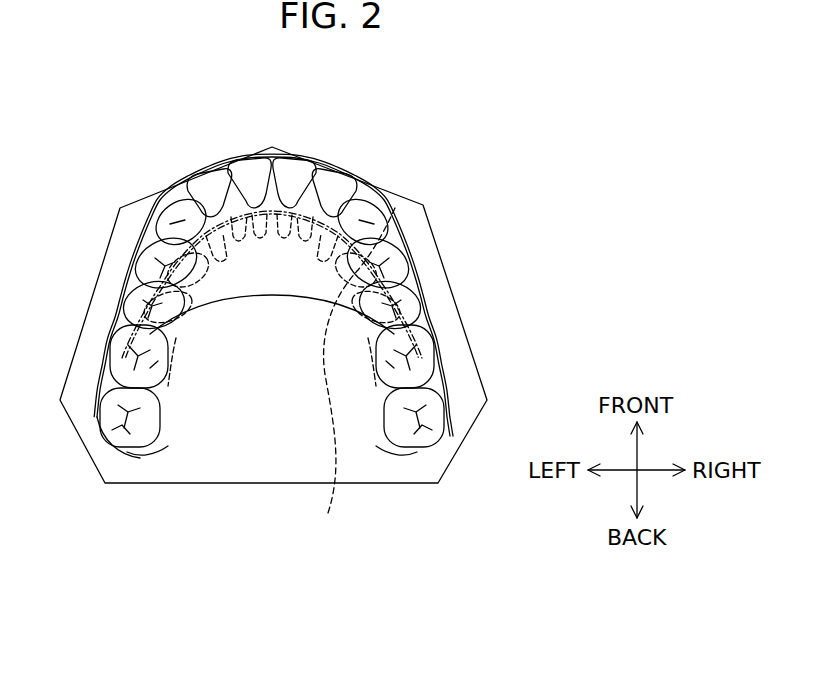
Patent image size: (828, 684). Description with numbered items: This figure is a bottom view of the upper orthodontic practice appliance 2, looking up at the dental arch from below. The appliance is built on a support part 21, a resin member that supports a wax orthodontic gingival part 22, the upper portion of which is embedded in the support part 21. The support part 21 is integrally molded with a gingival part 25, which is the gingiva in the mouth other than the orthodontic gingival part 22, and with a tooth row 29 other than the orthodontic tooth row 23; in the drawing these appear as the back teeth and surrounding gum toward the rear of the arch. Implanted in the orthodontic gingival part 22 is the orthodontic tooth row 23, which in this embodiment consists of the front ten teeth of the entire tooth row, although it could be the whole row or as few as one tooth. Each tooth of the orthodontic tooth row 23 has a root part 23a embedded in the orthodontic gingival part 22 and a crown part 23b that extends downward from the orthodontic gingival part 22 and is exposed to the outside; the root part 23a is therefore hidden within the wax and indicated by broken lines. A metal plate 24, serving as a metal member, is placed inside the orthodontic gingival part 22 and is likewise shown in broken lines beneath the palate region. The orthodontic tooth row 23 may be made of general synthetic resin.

The upper orthodontic practice appliance 2 is at (375, 128).
The support part 21 is at (428, 250).
The orthodontic gingival part 22 is at (270, 283).
The orthodontic tooth row 23 is at (255, 228).
The root part 23a is at (200, 240).
The crown part 23b is at (210, 188).
The metal plate 24 is at (357, 375).
The gingival part 25 is at (437, 382).
The tooth row 29 is at (433, 432).